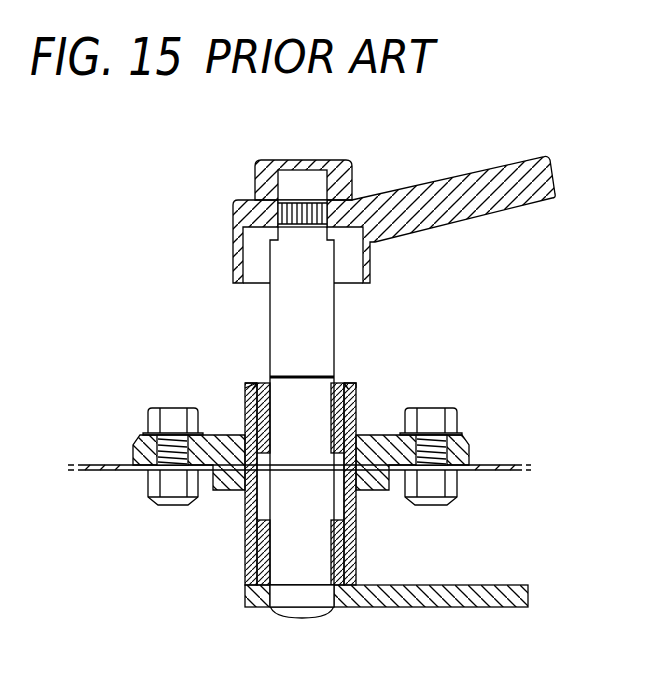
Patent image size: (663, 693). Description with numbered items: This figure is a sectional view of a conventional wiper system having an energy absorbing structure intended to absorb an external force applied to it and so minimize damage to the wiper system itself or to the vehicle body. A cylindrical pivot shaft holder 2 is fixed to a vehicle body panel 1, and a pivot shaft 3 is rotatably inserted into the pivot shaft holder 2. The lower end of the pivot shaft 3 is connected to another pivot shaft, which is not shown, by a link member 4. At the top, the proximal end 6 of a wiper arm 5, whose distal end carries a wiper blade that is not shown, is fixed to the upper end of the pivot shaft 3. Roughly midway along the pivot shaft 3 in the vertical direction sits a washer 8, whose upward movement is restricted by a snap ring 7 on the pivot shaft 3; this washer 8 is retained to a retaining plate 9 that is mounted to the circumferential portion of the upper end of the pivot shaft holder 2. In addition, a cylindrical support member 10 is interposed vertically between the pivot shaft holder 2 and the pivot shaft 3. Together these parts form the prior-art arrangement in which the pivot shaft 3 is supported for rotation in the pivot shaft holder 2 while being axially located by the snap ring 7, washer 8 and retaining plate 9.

The vehicle body panel 1 is at (490, 466).
The pivot shaft holder 2 is at (356, 535).
The pivot shaft 3 is at (283, 297).
The link member 4 is at (402, 607).
The wiper arm 5 is at (463, 175).
The proximal end 6 is at (237, 206).
The snap ring 7 is at (340, 378).
The washer 8 is at (268, 381).
The retaining plate 9 is at (357, 384).
The support member 10 is at (245, 387).